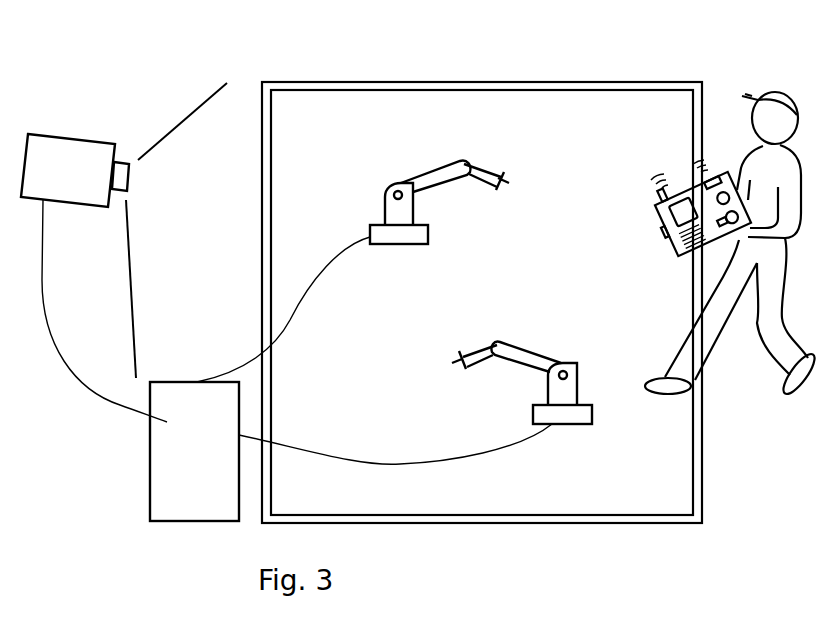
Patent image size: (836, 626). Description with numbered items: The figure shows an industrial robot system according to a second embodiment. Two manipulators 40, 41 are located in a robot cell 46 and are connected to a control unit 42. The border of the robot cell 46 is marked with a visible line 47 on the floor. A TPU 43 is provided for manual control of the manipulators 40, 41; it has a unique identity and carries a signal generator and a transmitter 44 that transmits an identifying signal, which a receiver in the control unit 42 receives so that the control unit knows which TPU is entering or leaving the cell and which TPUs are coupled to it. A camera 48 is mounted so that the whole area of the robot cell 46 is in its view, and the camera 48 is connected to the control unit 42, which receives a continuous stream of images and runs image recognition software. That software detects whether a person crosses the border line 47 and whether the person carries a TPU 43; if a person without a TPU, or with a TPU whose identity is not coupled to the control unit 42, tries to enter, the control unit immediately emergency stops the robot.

The manipulator 40 is at (413, 160).
The manipulator 41 is at (546, 322).
The control unit 42 is at (170, 447).
The TPU 43 is at (675, 262).
The transmitter 44 is at (719, 172).
The robot cell 46 is at (597, 145).
The visible line 47 is at (488, 83).
The camera 48 is at (58, 152).